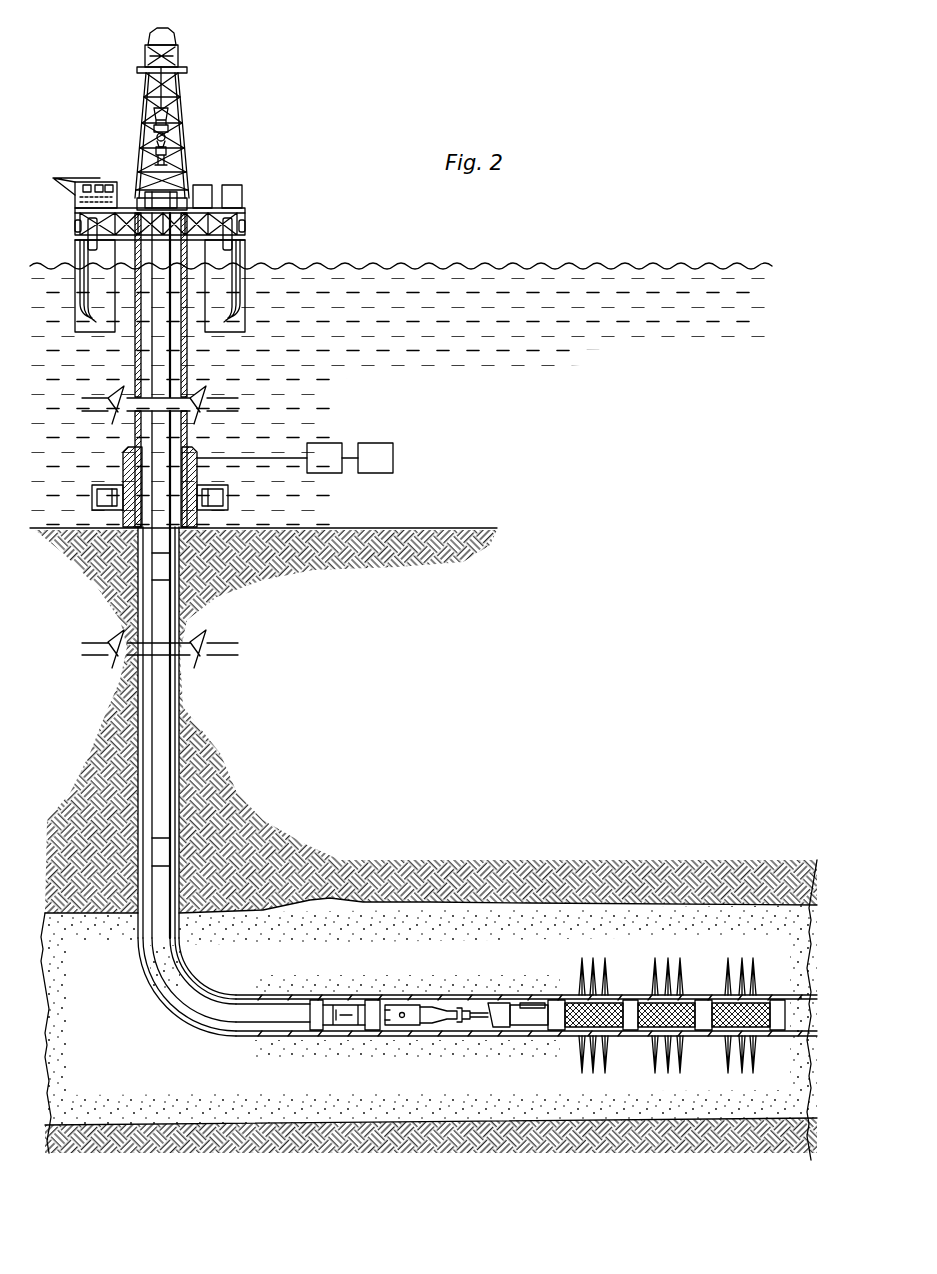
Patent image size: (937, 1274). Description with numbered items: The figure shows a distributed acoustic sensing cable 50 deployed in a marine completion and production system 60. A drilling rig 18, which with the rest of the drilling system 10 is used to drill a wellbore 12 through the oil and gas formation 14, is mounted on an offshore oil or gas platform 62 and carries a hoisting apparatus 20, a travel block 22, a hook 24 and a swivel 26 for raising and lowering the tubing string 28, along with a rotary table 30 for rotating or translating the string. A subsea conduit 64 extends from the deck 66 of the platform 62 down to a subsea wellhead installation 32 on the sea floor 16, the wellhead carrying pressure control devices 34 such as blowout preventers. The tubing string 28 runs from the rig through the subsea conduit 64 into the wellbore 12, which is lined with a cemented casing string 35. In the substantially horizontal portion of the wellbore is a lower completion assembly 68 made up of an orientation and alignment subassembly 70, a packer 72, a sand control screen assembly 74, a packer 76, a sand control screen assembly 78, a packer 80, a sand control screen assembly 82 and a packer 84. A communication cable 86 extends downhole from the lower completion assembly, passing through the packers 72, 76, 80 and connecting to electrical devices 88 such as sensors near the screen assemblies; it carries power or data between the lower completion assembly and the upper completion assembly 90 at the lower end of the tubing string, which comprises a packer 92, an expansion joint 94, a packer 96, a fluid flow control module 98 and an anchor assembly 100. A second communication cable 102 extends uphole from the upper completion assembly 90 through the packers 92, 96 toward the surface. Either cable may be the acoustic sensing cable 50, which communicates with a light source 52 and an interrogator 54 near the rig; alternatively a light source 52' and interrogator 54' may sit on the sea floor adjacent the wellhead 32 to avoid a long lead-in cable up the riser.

The drilling system 10 is at (249, 63).
The wellbore 12 is at (183, 703).
The oil and gas formation 14 is at (262, 803).
The sea floor 16 is at (466, 527).
The drilling rig 18 is at (180, 58).
The hoisting apparatus 20 is at (147, 42).
The travel block 22 is at (176, 105).
The hook 24 is at (180, 138).
The swivel 26 is at (150, 140).
The tubing string 28 is at (151, 345).
The rotary table 30 is at (160, 195).
The subsea wellhead installation 32 is at (121, 470).
The pressure control devices 34 is at (100, 497).
The casing string 35 is at (180, 775).
The distributed acoustic sensing cable 50 is at (176, 598).
The light source 52 is at (244, 173).
The interrogator 54 is at (209, 173).
The light source 52' is at (374, 433).
The interrogator 54' is at (276, 433).
The completion and production system 60 is at (82, 762).
The oil or gas platform 62 is at (247, 236).
The subsea conduit 64 is at (188, 368).
The deck 66 is at (246, 209).
The lower completion assembly 68 is at (706, 1000).
The orientation and alignment subassembly 70 is at (504, 1028).
The packer 72 is at (557, 1032).
The sand control screen assembly 74 is at (618, 1001).
The packer 76 is at (631, 1032).
The sand control screen assembly 78 is at (686, 1001).
The packer 80 is at (705, 1032).
The sand control screen assembly 82 is at (762, 1001).
The packer 84 is at (779, 1032).
The communication cable 86 is at (540, 1003).
The electrical devices 88 is at (530, 1001).
The upper completion assembly 90 is at (421, 1001).
The packer 92 is at (316, 999).
The expansion joint 94 is at (344, 1032).
The packer 96 is at (372, 999).
The fluid flow control module 98 is at (402, 1026).
The anchor assembly 100 is at (430, 1024).
The communication cable 102 is at (404, 1005).